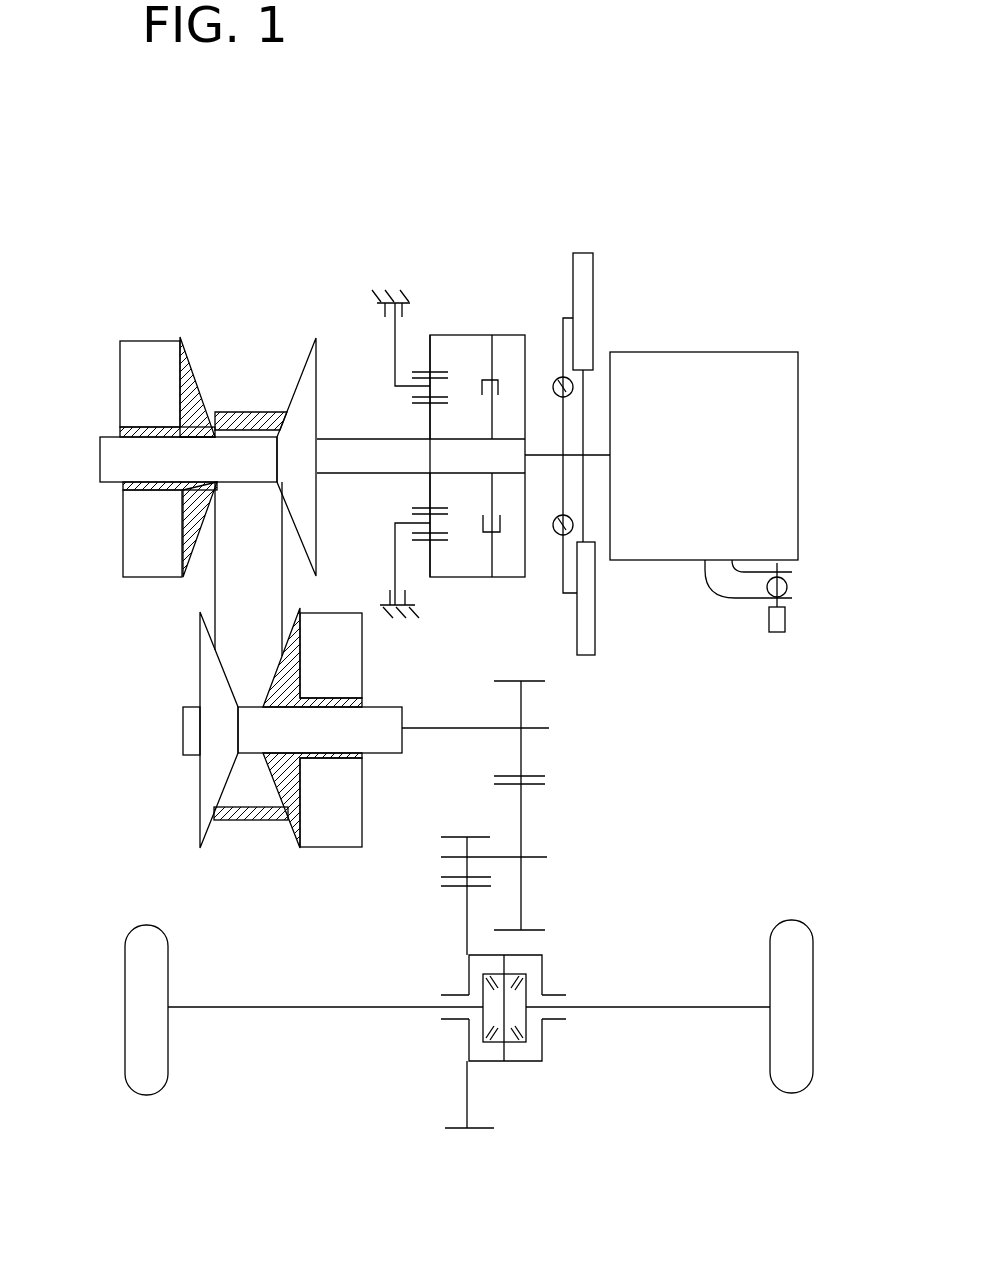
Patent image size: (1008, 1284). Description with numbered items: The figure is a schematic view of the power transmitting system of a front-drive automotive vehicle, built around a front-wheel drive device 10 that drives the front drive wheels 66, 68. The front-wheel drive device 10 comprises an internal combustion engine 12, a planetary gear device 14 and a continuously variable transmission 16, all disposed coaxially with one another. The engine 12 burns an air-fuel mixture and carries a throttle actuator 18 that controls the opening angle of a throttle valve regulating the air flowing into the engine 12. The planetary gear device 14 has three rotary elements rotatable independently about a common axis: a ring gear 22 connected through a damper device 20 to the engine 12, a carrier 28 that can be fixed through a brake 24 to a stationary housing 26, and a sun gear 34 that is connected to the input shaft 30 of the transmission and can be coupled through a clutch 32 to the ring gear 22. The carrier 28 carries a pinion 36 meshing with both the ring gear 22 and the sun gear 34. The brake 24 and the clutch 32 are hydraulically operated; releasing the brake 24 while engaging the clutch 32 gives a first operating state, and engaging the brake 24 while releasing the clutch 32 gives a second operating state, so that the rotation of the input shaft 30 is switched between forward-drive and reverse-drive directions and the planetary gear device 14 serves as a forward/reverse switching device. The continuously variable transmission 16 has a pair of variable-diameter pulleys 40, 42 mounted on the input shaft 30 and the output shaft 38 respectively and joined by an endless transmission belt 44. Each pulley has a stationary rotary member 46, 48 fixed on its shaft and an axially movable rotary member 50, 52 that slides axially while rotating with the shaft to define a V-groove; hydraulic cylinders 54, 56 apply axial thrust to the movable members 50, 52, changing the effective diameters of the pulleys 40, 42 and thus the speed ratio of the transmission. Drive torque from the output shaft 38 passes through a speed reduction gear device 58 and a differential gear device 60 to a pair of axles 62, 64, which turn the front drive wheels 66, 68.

The front-wheel drive device 10 is at (652, 264).
The internal combustion engine 12 is at (762, 361).
The planetary gear device 14 is at (538, 228).
The continuously variable transmission 16 is at (317, 757).
The throttle actuator 18 is at (778, 622).
The damper device 20 is at (556, 535).
The ring gear 22 is at (438, 372).
The brake 24 is at (383, 314).
The housing 26 is at (387, 296).
The carrier 28 is at (394, 350).
The input shaft 30 is at (105, 455).
The clutch 32 is at (497, 393).
The sun gear 34 is at (413, 503).
The pinion 36 is at (442, 528).
The output shaft 38 is at (190, 724).
The variable-diameter pulley 40 is at (208, 389).
The variable-diameter pulley 42 is at (329, 757).
The endless transmission belt 44 is at (217, 578).
The stationary rotary member 46 is at (300, 382).
The stationary rotary member 48 is at (210, 800).
The axially movable rotary member 50 is at (192, 370).
The axially movable rotary member 52 is at (257, 820).
The hydraulic cylinder 54 is at (130, 350).
The hydraulic cylinder 56 is at (350, 785).
The speed reduction gear device 58 is at (548, 824).
The differential gear device 60 is at (570, 972).
The axle 62 is at (253, 1007).
The axle 64 is at (650, 1005).
The front drive wheel 66 is at (135, 955).
The front drive wheel 68 is at (800, 958).